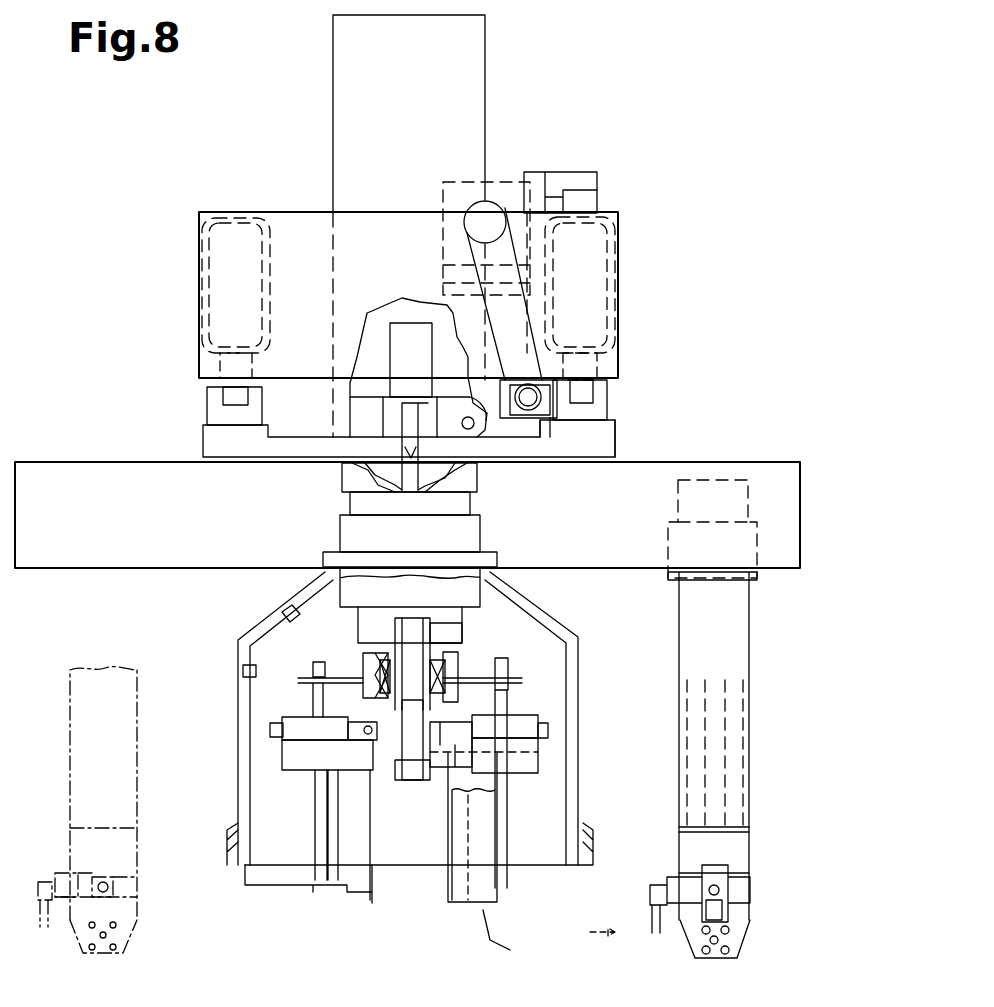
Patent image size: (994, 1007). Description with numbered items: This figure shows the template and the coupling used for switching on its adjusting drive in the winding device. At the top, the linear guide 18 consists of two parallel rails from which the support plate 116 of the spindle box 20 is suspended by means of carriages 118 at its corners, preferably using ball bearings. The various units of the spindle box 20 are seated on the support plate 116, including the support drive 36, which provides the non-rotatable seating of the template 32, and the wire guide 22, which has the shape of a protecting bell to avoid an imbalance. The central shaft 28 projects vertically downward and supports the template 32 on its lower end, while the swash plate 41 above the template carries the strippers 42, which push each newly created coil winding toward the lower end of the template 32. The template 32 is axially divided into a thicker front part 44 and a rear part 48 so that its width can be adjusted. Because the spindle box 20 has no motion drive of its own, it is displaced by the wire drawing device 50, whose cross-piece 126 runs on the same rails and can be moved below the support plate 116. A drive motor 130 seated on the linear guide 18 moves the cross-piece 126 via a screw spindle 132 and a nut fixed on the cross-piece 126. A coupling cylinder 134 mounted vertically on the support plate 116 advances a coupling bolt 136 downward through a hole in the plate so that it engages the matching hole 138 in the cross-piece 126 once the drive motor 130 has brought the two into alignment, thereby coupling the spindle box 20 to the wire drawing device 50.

The linear guide 18 is at (227, 365).
The spindle box 20 is at (620, 428).
The wire guide 22 is at (245, 888).
The central shaft 28 is at (430, 630).
The template 32 is at (482, 908).
The support drive 36 is at (358, 537).
The swash plate 41 is at (348, 677).
The strippers 42 is at (503, 855).
The front part 44 is at (357, 900).
The rear part 48 is at (458, 902).
The wire drawing device 50 is at (142, 713).
The support plate 116 is at (210, 443).
The carriages 118 is at (208, 402).
The cross-piece 126 is at (790, 478).
The drive motor 130 is at (500, 200).
The screw spindle 132 is at (547, 427).
The coupling cylinder 134 is at (398, 333).
The coupling bolt 136 is at (400, 405).
The hole 138 is at (470, 490).